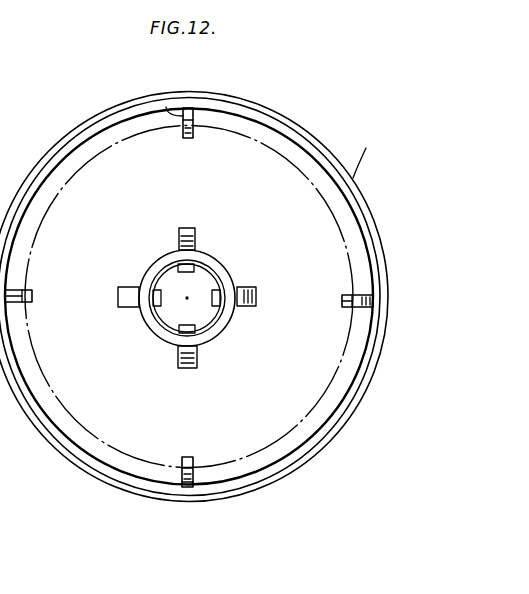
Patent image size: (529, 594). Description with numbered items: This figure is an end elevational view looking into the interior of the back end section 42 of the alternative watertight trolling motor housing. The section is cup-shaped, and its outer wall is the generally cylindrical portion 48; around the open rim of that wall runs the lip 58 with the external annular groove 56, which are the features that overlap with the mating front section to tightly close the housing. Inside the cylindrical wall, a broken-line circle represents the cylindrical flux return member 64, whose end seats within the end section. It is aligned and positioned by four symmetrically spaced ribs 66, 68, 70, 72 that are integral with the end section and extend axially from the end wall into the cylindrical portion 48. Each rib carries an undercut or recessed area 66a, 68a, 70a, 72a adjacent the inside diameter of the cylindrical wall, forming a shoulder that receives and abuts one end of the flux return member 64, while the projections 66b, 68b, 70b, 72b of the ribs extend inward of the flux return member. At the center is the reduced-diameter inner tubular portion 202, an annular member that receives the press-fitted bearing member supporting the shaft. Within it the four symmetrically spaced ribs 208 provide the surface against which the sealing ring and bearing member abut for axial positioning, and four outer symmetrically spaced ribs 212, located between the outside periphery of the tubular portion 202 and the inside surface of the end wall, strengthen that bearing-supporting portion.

The second end section 42 is at (386, 146).
The cylindrical portion 48 is at (302, 130).
The external annular groove 56 is at (96, 122).
The lip 58 is at (83, 138).
The cylindrical flux return member 64 is at (94, 420).
The rib 66 is at (18, 296).
The recessed area 66a is at (18, 302).
The projection 66b is at (28, 290).
The rib 68 is at (193, 114).
The recessed area 68a is at (172, 110).
The projection 68b is at (184, 136).
The rib 70 is at (355, 294).
The recessed area 70a is at (345, 307).
The projection 70b is at (342, 295).
The rib 72 is at (182, 480).
The recessed area 72a is at (186, 488).
The projection 72b is at (188, 458).
The second tubular portion 202 is at (158, 258).
The ribs 208 is at (196, 270).
The ribs 212 is at (192, 236).